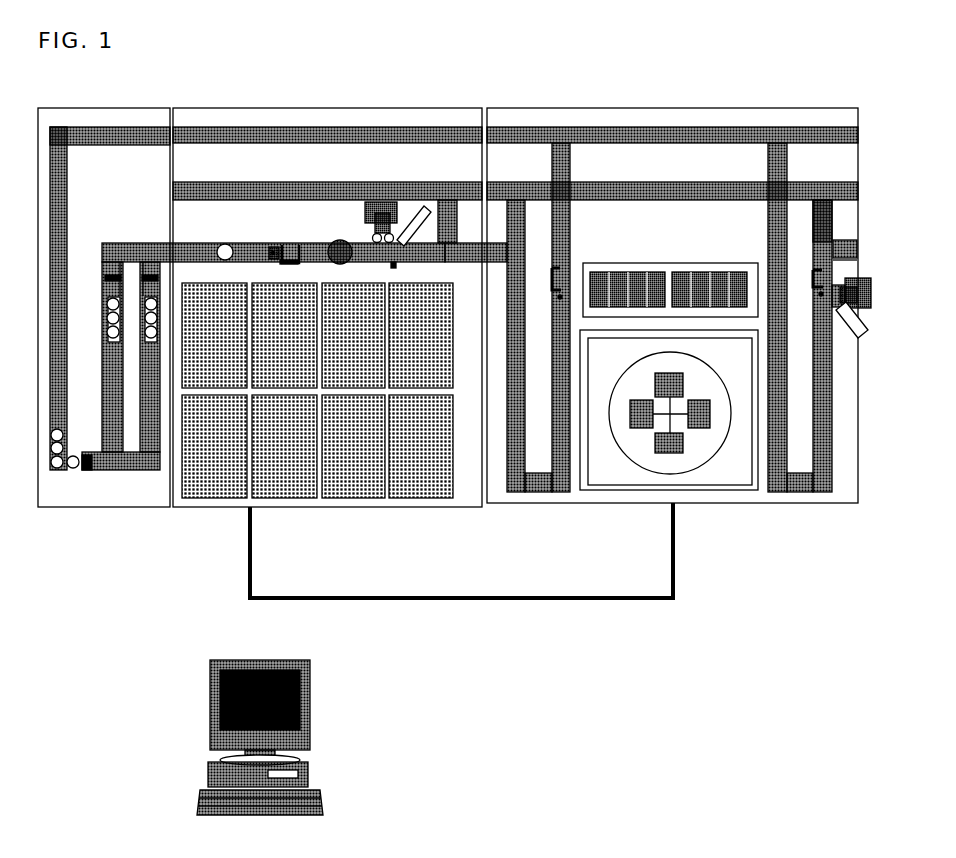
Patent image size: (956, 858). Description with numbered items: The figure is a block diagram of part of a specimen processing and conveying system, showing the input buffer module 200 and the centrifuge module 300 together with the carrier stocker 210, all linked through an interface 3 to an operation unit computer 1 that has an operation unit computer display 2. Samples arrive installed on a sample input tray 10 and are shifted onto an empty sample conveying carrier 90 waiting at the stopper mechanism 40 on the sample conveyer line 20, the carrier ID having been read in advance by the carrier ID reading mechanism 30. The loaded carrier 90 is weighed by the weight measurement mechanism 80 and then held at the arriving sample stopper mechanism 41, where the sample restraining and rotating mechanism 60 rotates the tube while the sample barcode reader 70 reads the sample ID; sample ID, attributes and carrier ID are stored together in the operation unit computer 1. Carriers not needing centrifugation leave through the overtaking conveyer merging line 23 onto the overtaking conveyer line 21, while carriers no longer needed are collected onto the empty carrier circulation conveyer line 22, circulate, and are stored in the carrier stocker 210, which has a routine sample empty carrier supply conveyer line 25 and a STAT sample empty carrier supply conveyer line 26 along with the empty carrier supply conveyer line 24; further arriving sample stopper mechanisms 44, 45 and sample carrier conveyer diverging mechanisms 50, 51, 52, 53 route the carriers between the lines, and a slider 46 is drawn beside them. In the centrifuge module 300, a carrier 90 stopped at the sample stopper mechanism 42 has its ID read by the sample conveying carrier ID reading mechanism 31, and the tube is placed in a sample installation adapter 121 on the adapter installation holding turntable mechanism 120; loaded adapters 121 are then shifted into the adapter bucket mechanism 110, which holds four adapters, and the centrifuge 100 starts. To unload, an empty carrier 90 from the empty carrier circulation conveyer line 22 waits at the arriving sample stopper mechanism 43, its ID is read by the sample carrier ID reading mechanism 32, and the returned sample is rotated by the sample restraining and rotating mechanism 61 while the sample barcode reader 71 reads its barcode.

The operation unit computer 1 is at (310, 775).
The operation unit computer display 2 is at (312, 712).
The interface 3 is at (249, 600).
The sample input tray 10 is at (325, 462).
The sample conveyer line 20 is at (198, 246).
The overtaking conveyer line 21 is at (237, 197).
The empty carrier circulation conveyer line 22 is at (272, 142).
The overtaking conveyer merging line 23 is at (446, 205).
The empty carrier supply conveyer line 24 is at (775, 235).
The routine sample empty carrier supply conveyer line 25 is at (146, 378).
The STAT sample empty carrier supply conveyer line 26 is at (106, 378).
The carrier ID reading mechanism 30 is at (271, 247).
The sample conveying carrier ID reading mechanism 31 is at (558, 300).
The sample carrier ID reading mechanism 32 is at (821, 307).
The stopper mechanism 40 is at (292, 246).
The arriving sample stopper mechanism 41 is at (396, 266).
The sample stopper mechanism 42 is at (550, 280).
The arriving sample stopper mechanism 43 is at (812, 282).
The arriving sample stopper mechanism 44 is at (64, 470).
The arriving sample stopper mechanism 45 is at (110, 266).
The slider 46 is at (150, 268).
The sample carrier conveyer diverging mechanism 50 is at (452, 262).
The sample carrier conveyer diverging mechanism 51 is at (545, 190).
The sample carrier conveyer diverging mechanism 52 is at (818, 243).
The sample carrier conveyer diverging mechanism 53 is at (126, 472).
The sample restraining and rotating mechanism 60 is at (374, 203).
The sample restraining and rotating mechanism 61 is at (846, 241).
The sample barcode reader 70 is at (410, 212).
The sample barcode reader 71 is at (856, 335).
The weight measurement mechanism 80 is at (338, 245).
The sample conveying carrier 90 is at (226, 262).
The centrifuge 100 is at (735, 473).
The adapter bucket mechanism 110 is at (640, 415).
The adapter installation holding turntable mechanism 120 is at (630, 266).
The sample installation adapter 121 is at (682, 278).
The input buffer module 200 is at (420, 508).
The carrier stocker 210 is at (100, 508).
The centrifuge module 300 is at (560, 505).